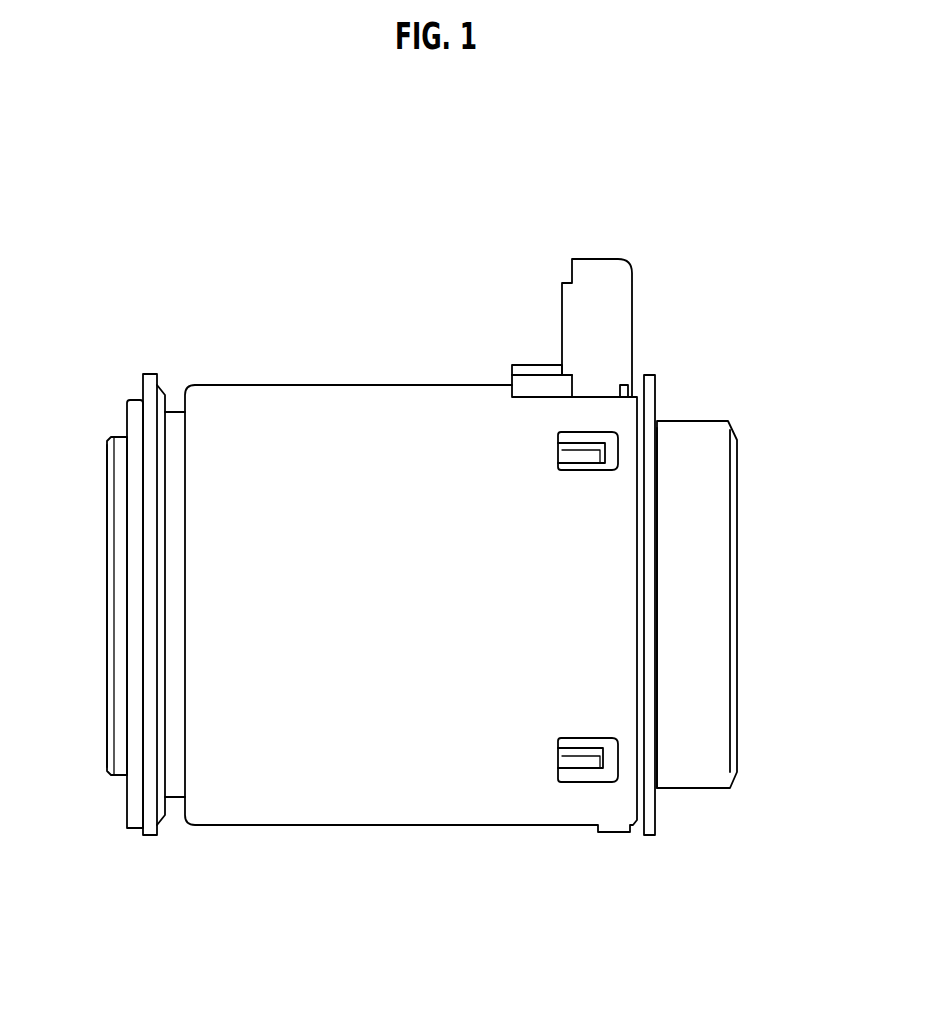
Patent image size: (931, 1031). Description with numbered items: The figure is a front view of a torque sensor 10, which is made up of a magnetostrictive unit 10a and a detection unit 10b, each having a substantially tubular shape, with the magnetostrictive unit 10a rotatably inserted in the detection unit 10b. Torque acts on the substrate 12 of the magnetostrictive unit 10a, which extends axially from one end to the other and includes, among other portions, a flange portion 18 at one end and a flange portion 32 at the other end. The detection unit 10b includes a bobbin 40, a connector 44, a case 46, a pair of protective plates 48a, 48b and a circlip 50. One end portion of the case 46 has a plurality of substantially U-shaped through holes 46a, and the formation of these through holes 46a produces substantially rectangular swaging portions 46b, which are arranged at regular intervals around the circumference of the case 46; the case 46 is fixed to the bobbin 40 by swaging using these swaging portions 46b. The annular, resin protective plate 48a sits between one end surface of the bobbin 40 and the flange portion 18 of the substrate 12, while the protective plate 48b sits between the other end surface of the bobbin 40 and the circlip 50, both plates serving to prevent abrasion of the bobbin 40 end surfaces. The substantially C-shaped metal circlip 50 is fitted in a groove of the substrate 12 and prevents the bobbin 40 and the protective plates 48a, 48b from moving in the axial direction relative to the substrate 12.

The torque sensor 10 is at (124, 262).
The magnetostrictive unit 10a is at (95, 431).
The detection unit 10b is at (289, 369).
The substrate 12 is at (745, 416).
The flange portion 18 is at (703, 772).
The flange portion 32 is at (119, 778).
The bobbin 40 is at (174, 412).
The connector 44 is at (568, 307).
The case 46 is at (345, 397).
The through holes 46a is at (614, 434).
The swaging portions 46b is at (587, 450).
The protective plate 48a is at (646, 375).
The protective plate 48b is at (148, 374).
The circlip 50 is at (130, 394).